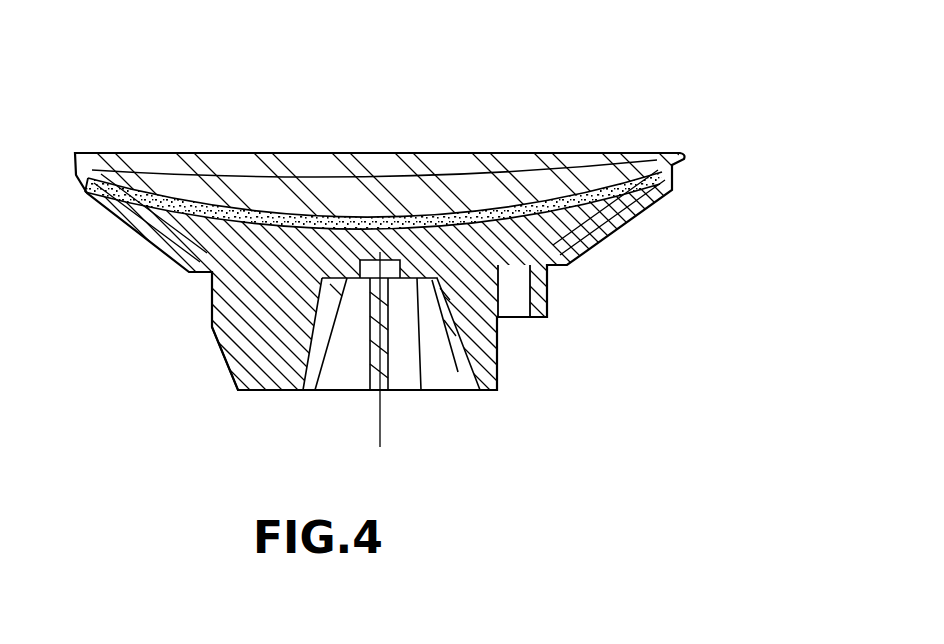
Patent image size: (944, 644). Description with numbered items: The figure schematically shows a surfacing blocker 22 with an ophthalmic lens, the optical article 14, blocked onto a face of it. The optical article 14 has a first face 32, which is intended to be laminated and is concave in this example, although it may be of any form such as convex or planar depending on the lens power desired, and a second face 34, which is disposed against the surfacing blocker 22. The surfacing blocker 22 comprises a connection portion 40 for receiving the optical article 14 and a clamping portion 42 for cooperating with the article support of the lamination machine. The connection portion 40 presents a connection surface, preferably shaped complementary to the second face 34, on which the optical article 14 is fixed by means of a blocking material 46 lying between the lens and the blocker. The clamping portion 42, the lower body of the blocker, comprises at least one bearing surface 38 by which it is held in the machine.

The optical article 14 is at (579, 177).
The surfacing blocker 22 is at (611, 383).
The first face 32 is at (452, 173).
The second face 34 is at (323, 213).
The bearing surface 38 is at (547, 292).
The connection portion 40 is at (668, 213).
The clamping portion 42 is at (198, 373).
The blocking material 46 is at (673, 183).